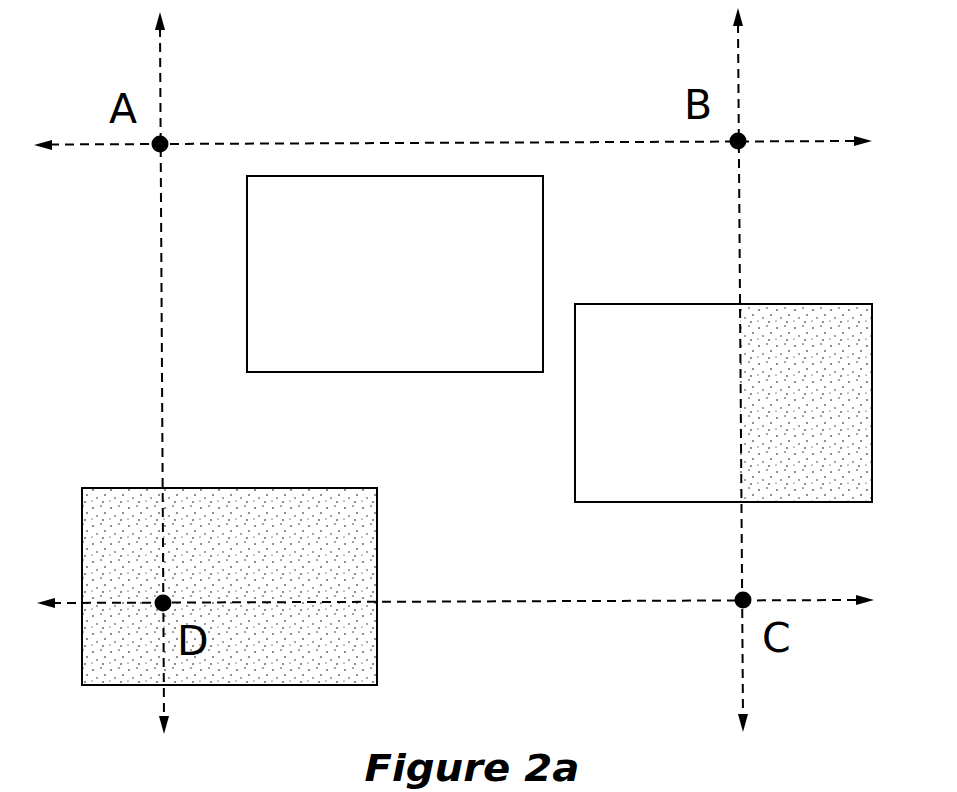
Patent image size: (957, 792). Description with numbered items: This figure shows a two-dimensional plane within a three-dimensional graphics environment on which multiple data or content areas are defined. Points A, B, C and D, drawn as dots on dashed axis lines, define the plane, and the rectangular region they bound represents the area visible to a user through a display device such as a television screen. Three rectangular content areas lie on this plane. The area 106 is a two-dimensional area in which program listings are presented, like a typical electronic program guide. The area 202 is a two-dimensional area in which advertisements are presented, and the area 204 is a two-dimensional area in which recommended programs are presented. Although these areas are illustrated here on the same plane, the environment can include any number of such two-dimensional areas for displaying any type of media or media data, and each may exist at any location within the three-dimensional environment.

The program listings area 106 is at (543, 237).
The advertisement area 202 is at (805, 304).
The recommended programs area 204 is at (297, 488).